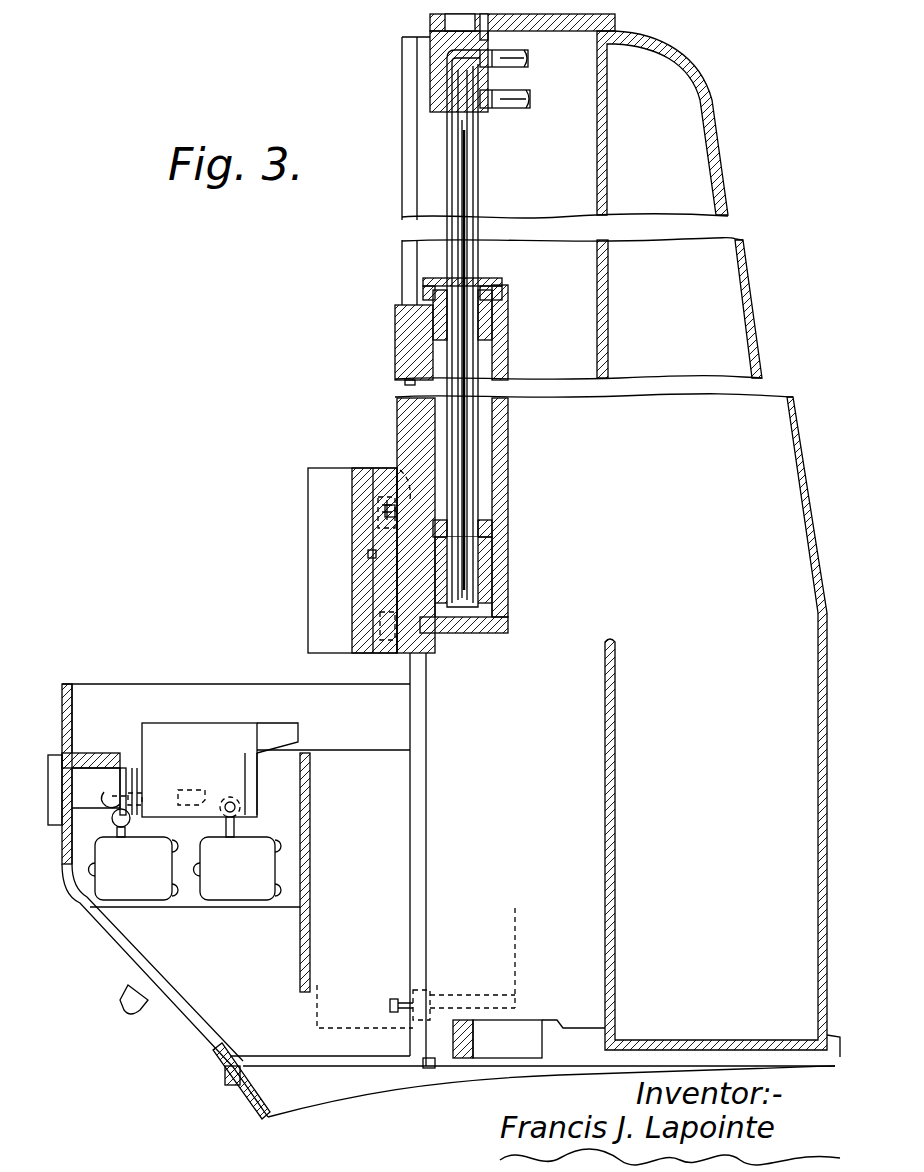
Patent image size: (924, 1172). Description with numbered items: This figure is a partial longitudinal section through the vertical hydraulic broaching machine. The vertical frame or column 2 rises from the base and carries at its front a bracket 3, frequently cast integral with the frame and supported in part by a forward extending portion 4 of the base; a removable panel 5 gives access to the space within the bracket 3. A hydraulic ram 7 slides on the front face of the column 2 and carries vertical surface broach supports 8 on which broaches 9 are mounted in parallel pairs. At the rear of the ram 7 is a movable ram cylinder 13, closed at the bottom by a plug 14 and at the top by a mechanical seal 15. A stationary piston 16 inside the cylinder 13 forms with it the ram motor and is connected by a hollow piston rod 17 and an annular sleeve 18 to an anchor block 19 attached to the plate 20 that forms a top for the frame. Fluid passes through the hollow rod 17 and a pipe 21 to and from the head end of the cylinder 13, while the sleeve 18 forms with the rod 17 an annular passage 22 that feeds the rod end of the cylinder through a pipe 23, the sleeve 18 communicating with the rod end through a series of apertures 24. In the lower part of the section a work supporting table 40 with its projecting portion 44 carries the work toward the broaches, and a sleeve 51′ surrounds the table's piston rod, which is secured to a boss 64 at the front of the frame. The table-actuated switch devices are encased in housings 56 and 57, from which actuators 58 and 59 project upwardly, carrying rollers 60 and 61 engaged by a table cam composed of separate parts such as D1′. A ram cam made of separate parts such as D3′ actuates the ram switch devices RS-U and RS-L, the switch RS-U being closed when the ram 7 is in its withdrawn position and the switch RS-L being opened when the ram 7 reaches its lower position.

The vertical frame or column 2 is at (760, 349).
The bracket 3 is at (62, 890).
The forward extending portion of the base 4 is at (232, 1108).
The removable panel 5 is at (122, 968).
The hydraulic ram 7 is at (395, 356).
The vertical surface broach supports 8 is at (397, 655).
The broaches 9 is at (308, 512).
The movable ram cylinder 13 is at (494, 362).
The plug 14 is at (487, 634).
The mechanical seal 15 is at (499, 272).
The stationary piston 16 is at (482, 572).
The piston rod 17 is at (462, 182).
The annular sleeve 18 is at (478, 208).
The anchor block 19 is at (430, 58).
The plate 20 is at (615, 22).
The pipe 21 is at (528, 58).
The annular passage 22 is at (480, 148).
The pipe 23 is at (530, 99).
The apertures 24 is at (490, 532).
The work supporting tables 40 is at (194, 710).
The projecting portion 44 is at (302, 710).
The lever 51′ is at (122, 768).
The housing 56 is at (147, 900).
The housing 57 is at (248, 900).
The actuator 58 is at (116, 827).
The actuator 59 is at (224, 826).
The roller 60 is at (117, 808).
The roller 61 is at (242, 800).
The boss 64 is at (96, 768).
The cam part D1′ is at (138, 793).
The cam part D3′ is at (380, 630).
The ram switch device RS-U is at (400, 470).
The ram switch device RS-L is at (413, 990).